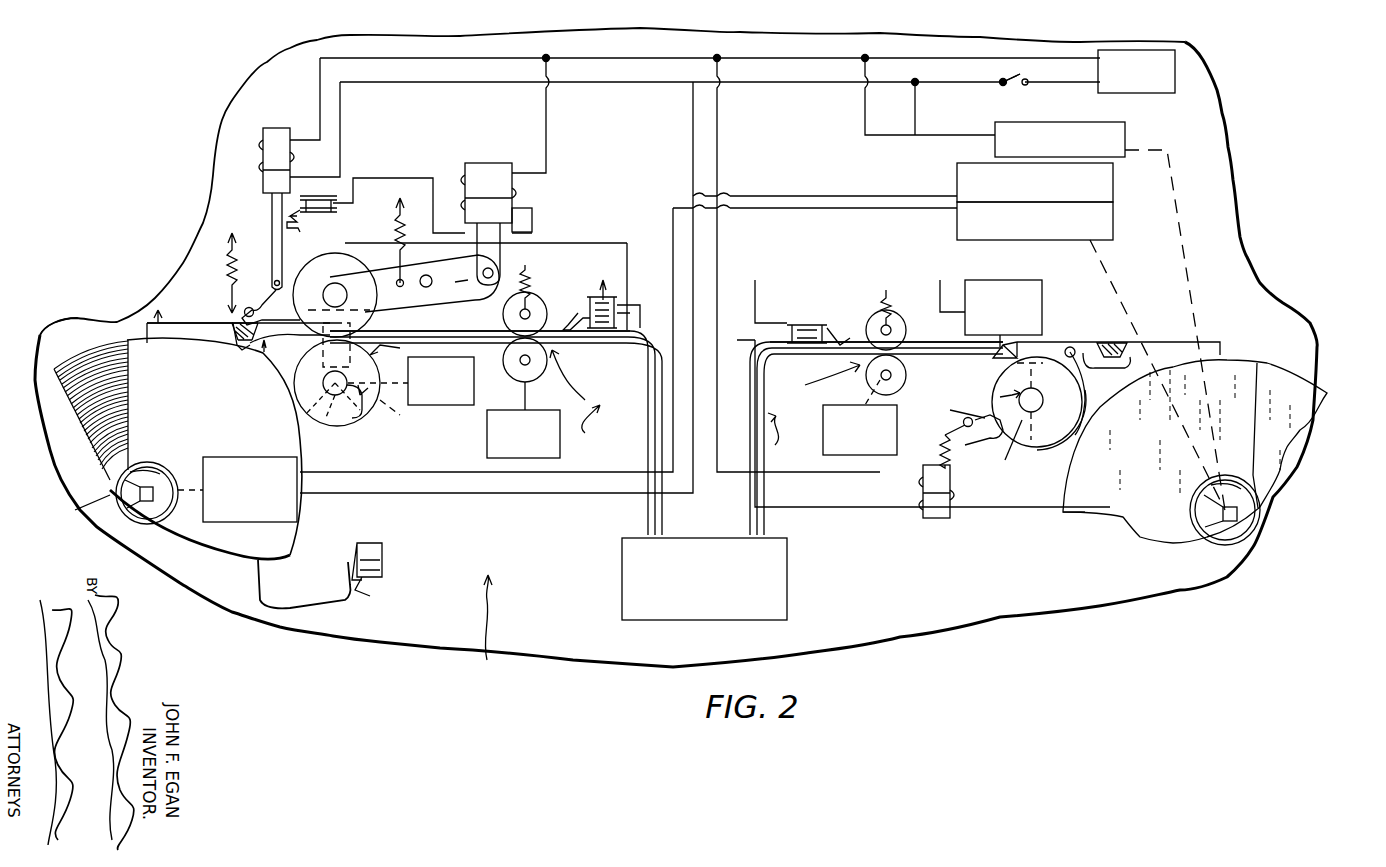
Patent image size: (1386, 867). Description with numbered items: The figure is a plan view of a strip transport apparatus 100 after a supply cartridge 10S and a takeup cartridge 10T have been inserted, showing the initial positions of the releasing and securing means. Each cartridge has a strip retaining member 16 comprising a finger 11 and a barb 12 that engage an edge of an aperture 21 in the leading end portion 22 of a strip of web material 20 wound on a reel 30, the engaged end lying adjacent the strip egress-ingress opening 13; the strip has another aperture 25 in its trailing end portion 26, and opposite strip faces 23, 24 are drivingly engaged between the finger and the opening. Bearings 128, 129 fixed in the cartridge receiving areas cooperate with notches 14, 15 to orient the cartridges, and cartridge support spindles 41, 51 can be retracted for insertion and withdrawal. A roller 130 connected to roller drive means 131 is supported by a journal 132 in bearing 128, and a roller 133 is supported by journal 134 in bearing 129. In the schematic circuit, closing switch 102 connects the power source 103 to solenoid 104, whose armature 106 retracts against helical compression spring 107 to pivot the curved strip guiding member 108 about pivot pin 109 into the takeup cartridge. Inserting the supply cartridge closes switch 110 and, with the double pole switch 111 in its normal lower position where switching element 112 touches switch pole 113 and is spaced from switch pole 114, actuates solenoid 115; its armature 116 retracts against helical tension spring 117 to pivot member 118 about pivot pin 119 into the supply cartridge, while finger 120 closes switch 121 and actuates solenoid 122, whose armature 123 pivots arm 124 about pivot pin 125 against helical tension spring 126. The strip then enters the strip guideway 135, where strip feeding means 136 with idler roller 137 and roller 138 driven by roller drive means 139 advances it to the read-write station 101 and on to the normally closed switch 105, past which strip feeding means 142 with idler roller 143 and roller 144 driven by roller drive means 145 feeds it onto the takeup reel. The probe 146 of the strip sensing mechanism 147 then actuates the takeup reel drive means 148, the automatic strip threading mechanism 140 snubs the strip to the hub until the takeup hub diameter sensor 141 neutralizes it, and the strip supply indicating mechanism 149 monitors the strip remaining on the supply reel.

The supply cartridge 10S is at (141, 305).
The takeup cartridge 10T is at (1216, 328).
The finger 11 is at (276, 340).
The barb 12 is at (242, 347).
The strip egress-ingress opening 13 is at (374, 352).
The notch 14 is at (1000, 400).
The notch 15 is at (400, 415).
The strip retaining member 16 is at (230, 333).
The strip of web material 20 is at (61, 328).
The aperture 21 is at (264, 352).
The end portion 22 is at (282, 330).
The strip face 23 is at (310, 335).
The strip face 24 is at (326, 340).
The aperture 25 is at (138, 468).
The end portion 26 is at (78, 508).
The reel 30 is at (1127, 523).
The cartridge support spindle 41 is at (147, 524).
The cartridge support spindle 51 is at (1215, 545).
The strip transport apparatus 100 is at (483, 633).
The read-write station 101 is at (787, 605).
The switch 102 is at (1008, 78).
The power source 103 is at (1100, 93).
The solenoid 104 is at (935, 518).
The switch 105 is at (808, 326).
The solenoid armature 106 is at (960, 460).
The helical compression spring 107 is at (932, 448).
The curved strip guiding member 108 is at (985, 440).
The pivot pin 109 is at (955, 418).
The switch 110 is at (390, 557).
The double pole switch 111 is at (604, 282).
The switching element 112 is at (585, 310).
The switch pole 113 is at (600, 335).
The switch pole 114 is at (584, 305).
The solenoid 115 is at (275, 128).
The armature 116 is at (272, 210).
The helical tension spring 117 is at (228, 268).
The member 118 is at (228, 314).
The pivot pin 119 is at (243, 245).
The finger 120 is at (298, 228).
The switch 121 is at (322, 200).
The solenoid 122 is at (485, 163).
The armature 123 is at (475, 252).
The arm 124 is at (470, 283).
The pivot pin 125 is at (426, 287).
The helical tension spring 126 is at (392, 218).
The bearing 128 is at (360, 418).
The bearing 129 is at (1027, 446).
The roller 130 is at (340, 426).
The roller drive means 131 is at (440, 405).
The journal 132 is at (330, 395).
The roller 133 is at (1040, 357).
The journal 134 is at (1051, 393).
The strip guideway 135 is at (666, 399).
The strip feeding means 136 is at (577, 382).
The idler roller 137 is at (540, 290).
The roller 138 is at (516, 368).
The roller drive means 139 is at (487, 430).
The automatic strip threading mechanism 140 is at (1113, 180).
The takeup hub diameter sensor 141 is at (1032, 240).
The strip feeding means 142 is at (814, 379).
The idler roller 143 is at (900, 312).
The roller 144 is at (905, 370).
The roller drive means 145 is at (897, 428).
The probe 146 is at (985, 335).
The strip sensing mechanism 147 is at (990, 280).
The takeup reel drive means 148 is at (1125, 140).
The strip supply indicating mechanism 149 is at (228, 457).